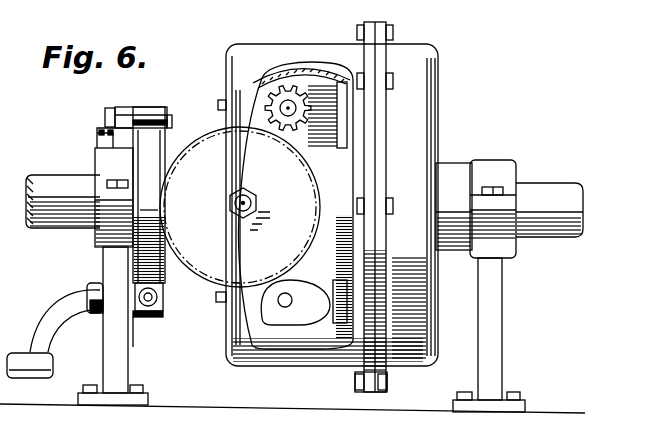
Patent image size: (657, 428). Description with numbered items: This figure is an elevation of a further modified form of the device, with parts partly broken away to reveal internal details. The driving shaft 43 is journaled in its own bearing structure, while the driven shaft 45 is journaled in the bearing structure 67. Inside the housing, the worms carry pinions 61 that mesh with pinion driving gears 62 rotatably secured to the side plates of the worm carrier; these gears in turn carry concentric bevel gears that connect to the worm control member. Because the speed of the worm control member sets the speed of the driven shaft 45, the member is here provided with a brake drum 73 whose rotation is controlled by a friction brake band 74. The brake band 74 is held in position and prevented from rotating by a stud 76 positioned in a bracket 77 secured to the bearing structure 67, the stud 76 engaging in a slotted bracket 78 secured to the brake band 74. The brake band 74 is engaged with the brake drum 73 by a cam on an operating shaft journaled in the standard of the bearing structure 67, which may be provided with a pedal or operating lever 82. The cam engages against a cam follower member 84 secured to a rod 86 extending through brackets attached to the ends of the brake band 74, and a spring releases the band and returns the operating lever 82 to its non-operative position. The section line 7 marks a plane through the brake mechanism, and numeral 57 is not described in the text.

The section line 7- 7 is at (146, 217).
The driving shaft 43 is at (540, 186).
The driven shaft 45 is at (50, 182).
The casing 57 is at (315, 50).
The pinion 61 is at (272, 68).
The pinion driving gear 62 is at (259, 195).
The bearing structure 67 is at (92, 244).
The brake drum 73 is at (172, 152).
The friction brake band 74 is at (168, 180).
The stud 76 is at (170, 125).
The bracket 77 is at (108, 129).
The slotted bracket 78 is at (150, 113).
The operating lever 82 is at (36, 320).
The cam follower member 84 is at (163, 312).
The rod 86 is at (163, 297).